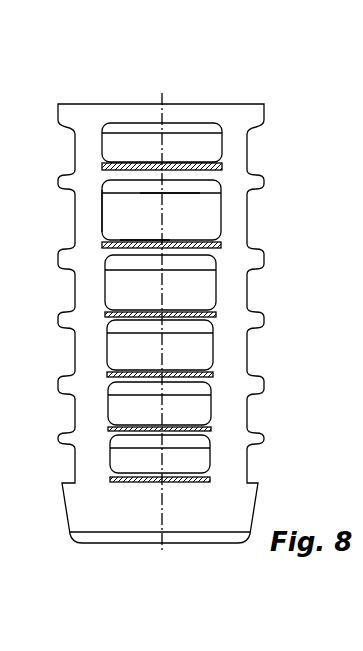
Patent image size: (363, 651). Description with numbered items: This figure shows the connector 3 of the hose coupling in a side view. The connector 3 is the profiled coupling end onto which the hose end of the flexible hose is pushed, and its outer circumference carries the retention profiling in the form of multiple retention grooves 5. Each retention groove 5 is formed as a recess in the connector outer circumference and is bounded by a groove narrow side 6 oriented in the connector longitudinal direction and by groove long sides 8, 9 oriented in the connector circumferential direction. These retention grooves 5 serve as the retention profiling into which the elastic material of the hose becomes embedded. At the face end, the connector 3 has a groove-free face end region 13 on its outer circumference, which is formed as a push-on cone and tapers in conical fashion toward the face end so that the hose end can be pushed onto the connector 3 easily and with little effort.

The connector 3 is at (300, 304).
The retention groove 5 is at (212, 148).
The groove narrow side 6 is at (106, 210).
The groove long side 8 is at (174, 190).
The groove long side 9 is at (140, 240).
The groove-free face end region 13 is at (231, 521).